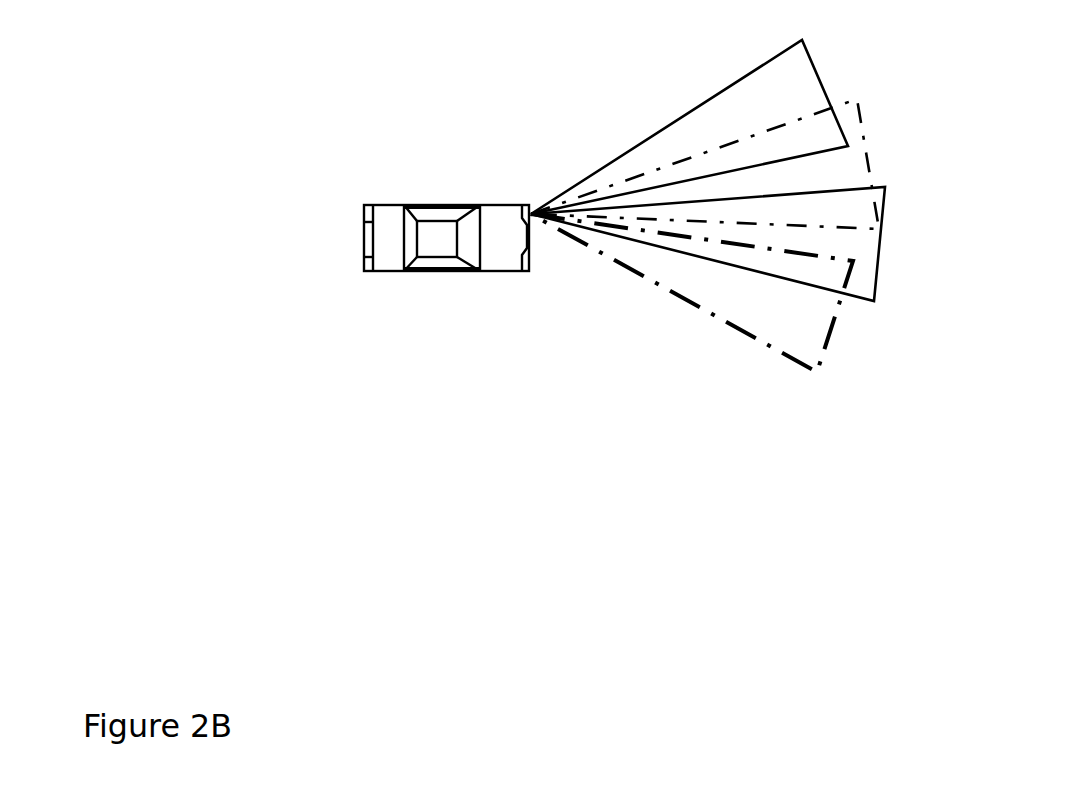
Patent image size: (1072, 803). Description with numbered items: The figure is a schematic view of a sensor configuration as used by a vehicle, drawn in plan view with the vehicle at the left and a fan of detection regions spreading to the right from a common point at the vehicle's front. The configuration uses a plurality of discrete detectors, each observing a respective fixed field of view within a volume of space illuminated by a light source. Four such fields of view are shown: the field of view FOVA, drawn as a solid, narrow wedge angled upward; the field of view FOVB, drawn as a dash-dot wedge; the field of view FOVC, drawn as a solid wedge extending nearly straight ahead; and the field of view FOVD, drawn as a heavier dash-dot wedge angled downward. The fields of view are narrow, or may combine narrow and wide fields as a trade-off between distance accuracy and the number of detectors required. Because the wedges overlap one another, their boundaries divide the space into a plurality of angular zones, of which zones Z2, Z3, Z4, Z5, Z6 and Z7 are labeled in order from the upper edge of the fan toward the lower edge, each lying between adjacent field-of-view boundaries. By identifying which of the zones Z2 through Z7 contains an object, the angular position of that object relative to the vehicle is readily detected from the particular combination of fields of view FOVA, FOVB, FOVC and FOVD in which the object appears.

The field of view FOVA is at (779, 57).
The field of view FOVB is at (866, 146).
The field of view FOVC is at (880, 253).
The field of view FOVD is at (652, 283).
The angular zone Z2 is at (822, 138).
The angular zone Z3 is at (832, 171).
The angular zone Z4 is at (832, 206).
The angular zone Z5 is at (830, 241).
The angular zone Z6 is at (825, 276).
The angular zone Z7 is at (803, 328).